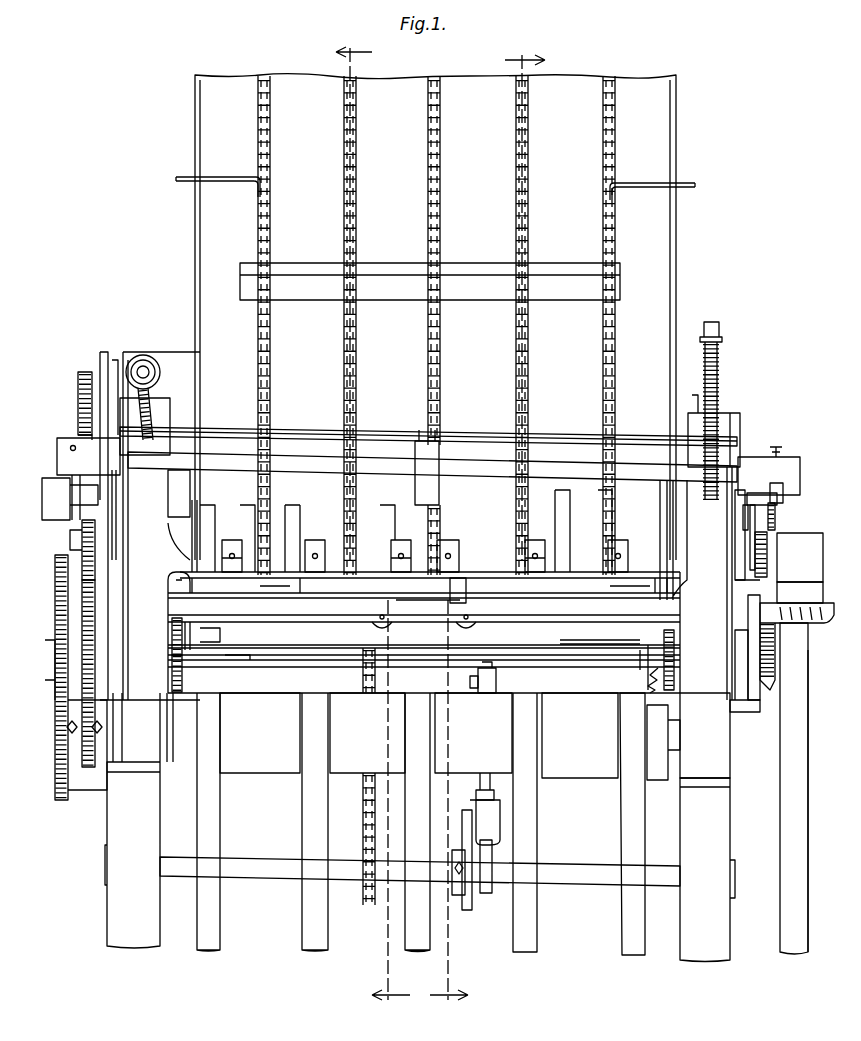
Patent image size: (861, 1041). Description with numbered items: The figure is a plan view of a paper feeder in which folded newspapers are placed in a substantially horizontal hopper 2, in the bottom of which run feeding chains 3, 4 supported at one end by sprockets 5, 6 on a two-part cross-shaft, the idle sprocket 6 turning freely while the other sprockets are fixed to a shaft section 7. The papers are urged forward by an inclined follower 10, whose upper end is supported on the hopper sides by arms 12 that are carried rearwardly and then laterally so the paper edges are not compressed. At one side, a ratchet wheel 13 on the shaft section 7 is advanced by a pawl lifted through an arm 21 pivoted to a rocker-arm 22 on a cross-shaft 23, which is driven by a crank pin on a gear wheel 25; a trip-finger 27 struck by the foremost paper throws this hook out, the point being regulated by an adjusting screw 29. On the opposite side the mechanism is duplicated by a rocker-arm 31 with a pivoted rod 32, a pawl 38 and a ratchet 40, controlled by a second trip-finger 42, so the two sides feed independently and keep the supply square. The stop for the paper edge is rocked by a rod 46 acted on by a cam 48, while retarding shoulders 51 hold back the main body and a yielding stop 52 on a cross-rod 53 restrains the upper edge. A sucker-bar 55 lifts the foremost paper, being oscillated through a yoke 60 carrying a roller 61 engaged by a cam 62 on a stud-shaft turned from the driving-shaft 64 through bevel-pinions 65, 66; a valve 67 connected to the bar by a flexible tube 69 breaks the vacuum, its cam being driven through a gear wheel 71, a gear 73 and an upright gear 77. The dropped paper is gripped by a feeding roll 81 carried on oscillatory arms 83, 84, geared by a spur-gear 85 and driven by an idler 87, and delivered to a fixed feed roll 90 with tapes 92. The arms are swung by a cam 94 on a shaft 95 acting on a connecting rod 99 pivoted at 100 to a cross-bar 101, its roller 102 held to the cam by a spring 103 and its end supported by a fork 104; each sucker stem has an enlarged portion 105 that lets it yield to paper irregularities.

The hopper 2 is at (435, 317).
The feeding chains 3 is at (272, 382).
The feeding chain 4 is at (442, 398).
The sprockets 5 is at (290, 552).
The idle sprocket 6 is at (432, 556).
The shaft section 7 is at (657, 687).
The follower 10 is at (380, 266).
The arms 12 is at (178, 182).
The ratchet wheel 13 is at (70, 543).
The arm 21 is at (68, 492).
The rocker-arm 22 is at (70, 477).
The cross-shaft 23 is at (387, 472).
The gear wheel 25 is at (54, 686).
The trip-finger 27 is at (288, 522).
The adjusting screw 29 is at (76, 437).
The rocker-arm 31 is at (792, 488).
The pivoted rod 32 is at (760, 522).
The pawl 38 is at (778, 531).
The ratchet 40 is at (770, 550).
The trip-finger 42 is at (570, 500).
The rod 46 is at (672, 416).
The cam 48 is at (668, 520).
The retarding shoulders 51 is at (232, 540).
The yielding stop 52 is at (443, 450).
The cross-rod 53 is at (379, 431).
The sucker-bar 55 is at (324, 614).
The yoke 60 is at (762, 625).
The anti-friction roller 61 is at (776, 650).
The cam 62 is at (770, 590).
The driving-shaft 64 is at (788, 806).
The bevel-pinion 65 is at (812, 618).
The bevel-pinion 66 is at (770, 690).
The valve 67 is at (118, 360).
The flexible tube 69 is at (150, 424).
The gear wheel 71 is at (84, 370).
The gear 73 is at (55, 700).
The gear 77 is at (676, 640).
The feeding roll 81 is at (424, 657).
The oscillatory arm 83 is at (655, 640).
The oscillatory arm 84 is at (192, 632).
The spur-gear 85 is at (172, 631).
The idler 87 is at (184, 677).
The fixed feed roll 90 is at (367, 733).
The tapes 92 is at (215, 765).
The cam 94 is at (462, 840).
The shaft 95 is at (248, 868).
The connecting rod 99 is at (492, 793).
The pivot 100 is at (470, 687).
The cross-bar 101 is at (592, 668).
The anti-friction roller 102 is at (462, 813).
The spring 103 is at (647, 712).
The fork 104 is at (494, 860).
The enlarged portion 105 is at (428, 622).